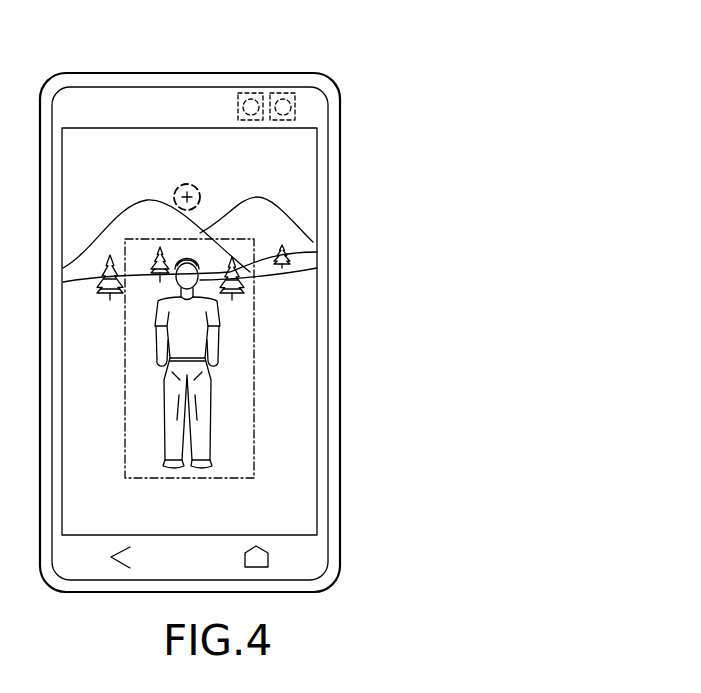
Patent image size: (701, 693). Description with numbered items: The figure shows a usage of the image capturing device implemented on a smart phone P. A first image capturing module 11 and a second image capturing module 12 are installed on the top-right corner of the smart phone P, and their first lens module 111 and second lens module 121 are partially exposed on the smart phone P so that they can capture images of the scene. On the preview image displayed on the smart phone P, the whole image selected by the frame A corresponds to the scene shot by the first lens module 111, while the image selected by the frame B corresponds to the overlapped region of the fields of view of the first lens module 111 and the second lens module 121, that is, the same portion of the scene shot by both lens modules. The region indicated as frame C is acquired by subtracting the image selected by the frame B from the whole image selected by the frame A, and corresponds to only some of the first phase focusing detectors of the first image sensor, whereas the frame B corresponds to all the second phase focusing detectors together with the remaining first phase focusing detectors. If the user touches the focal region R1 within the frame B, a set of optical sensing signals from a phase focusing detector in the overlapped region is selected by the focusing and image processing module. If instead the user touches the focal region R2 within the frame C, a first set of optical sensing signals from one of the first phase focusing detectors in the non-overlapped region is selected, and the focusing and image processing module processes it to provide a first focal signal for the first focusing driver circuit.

The first image capturing module 11 is at (238, 100).
The first lens module 111 is at (255, 95).
The second image capturing module 12 is at (296, 101).
The second lens module 121 is at (277, 95).
The smart phone P is at (340, 128).
The frame A is at (317, 429).
The frame C is at (293, 490).
The focal region R1 is at (205, 266).
The focal region R2 is at (200, 192).
The frame B is at (254, 363).